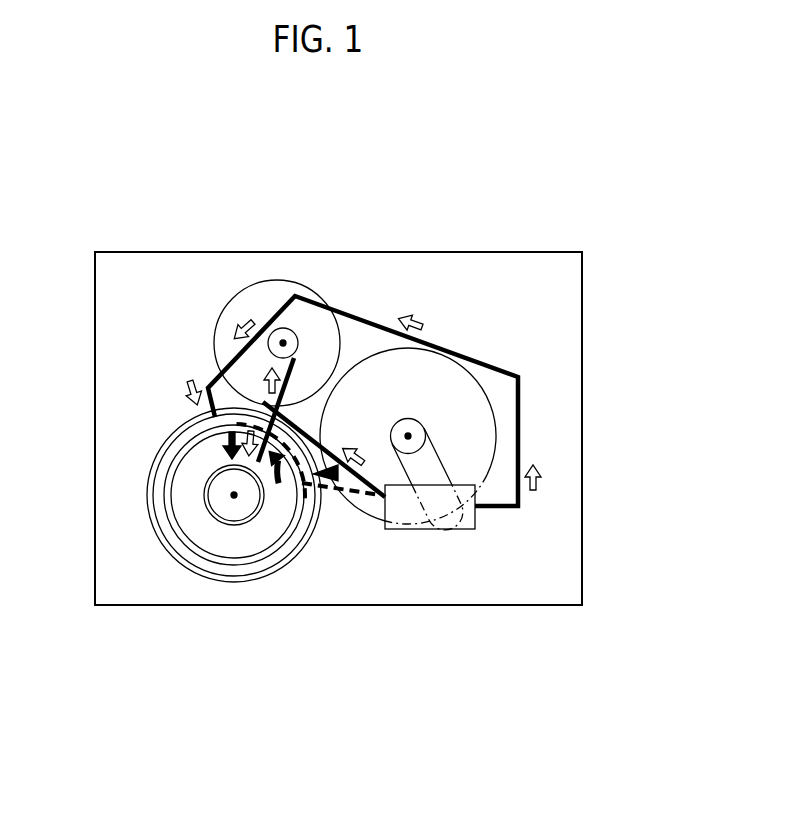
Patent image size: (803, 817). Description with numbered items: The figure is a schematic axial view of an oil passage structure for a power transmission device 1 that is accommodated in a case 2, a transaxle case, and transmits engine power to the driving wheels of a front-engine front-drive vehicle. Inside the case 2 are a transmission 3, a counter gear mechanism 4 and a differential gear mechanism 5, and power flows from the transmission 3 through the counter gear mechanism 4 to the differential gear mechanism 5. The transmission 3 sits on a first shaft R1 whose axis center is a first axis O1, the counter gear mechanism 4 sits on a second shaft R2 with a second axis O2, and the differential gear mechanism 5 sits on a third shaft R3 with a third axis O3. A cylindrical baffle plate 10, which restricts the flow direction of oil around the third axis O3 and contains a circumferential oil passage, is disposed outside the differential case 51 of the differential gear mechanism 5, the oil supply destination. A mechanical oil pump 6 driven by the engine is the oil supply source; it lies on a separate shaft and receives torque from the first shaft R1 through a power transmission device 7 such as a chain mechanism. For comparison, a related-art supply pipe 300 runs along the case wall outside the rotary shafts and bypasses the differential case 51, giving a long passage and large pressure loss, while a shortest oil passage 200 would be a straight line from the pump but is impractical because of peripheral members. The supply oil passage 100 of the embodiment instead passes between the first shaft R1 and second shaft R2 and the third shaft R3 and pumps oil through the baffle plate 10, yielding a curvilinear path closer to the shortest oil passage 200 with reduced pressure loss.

The power transmission device 1 is at (355, 434).
The case 2 is at (369, 428).
The transmission 3 is at (414, 364).
The counter gear mechanism 4 is at (274, 301).
The differential gear mechanism 5 is at (182, 495).
The differential case 51 is at (171, 495).
The baffle plate 10 is at (230, 538).
The mechanical oil pump 6 is at (430, 569).
The power transmission device 7 is at (427, 540).
The supply oil passage 100 is at (309, 557).
The shortest oil passage 200 is at (321, 510).
The supply pipe 300 is at (426, 401).
The first axis O1 is at (521, 441).
The second axis O2 is at (279, 272).
The third axis O3 is at (252, 579).
The first shaft R1 is at (517, 420).
The second shaft R2 is at (312, 278).
The third shaft R3 is at (229, 566).